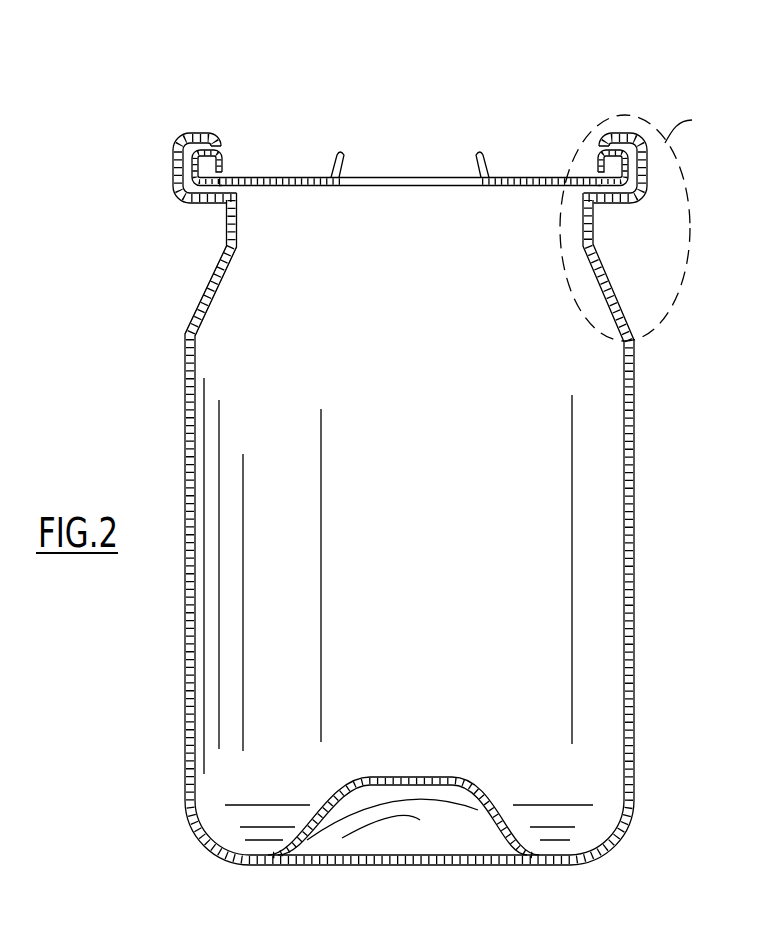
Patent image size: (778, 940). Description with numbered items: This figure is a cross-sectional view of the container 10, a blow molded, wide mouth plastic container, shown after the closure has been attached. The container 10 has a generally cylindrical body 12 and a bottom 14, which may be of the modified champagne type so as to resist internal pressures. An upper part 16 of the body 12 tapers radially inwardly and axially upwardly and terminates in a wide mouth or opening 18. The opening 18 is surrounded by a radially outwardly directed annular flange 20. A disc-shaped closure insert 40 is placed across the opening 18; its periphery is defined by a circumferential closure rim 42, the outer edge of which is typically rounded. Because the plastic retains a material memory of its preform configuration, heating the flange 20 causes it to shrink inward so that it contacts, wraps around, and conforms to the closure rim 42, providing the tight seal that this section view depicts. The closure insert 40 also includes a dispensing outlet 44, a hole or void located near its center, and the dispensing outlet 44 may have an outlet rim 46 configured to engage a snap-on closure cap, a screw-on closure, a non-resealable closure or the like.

The container 10 is at (138, 688).
The body 12 is at (635, 607).
The bottom 14 is at (330, 837).
The upper part 16 is at (209, 272).
The wide mouth or opening 18 is at (307, 72).
The annular flange 20 is at (150, 172).
The closure insert 40 is at (280, 177).
The closure rim 42 is at (226, 152).
The dispensing outlet 44 is at (403, 148).
The outlet rim 46 is at (494, 176).